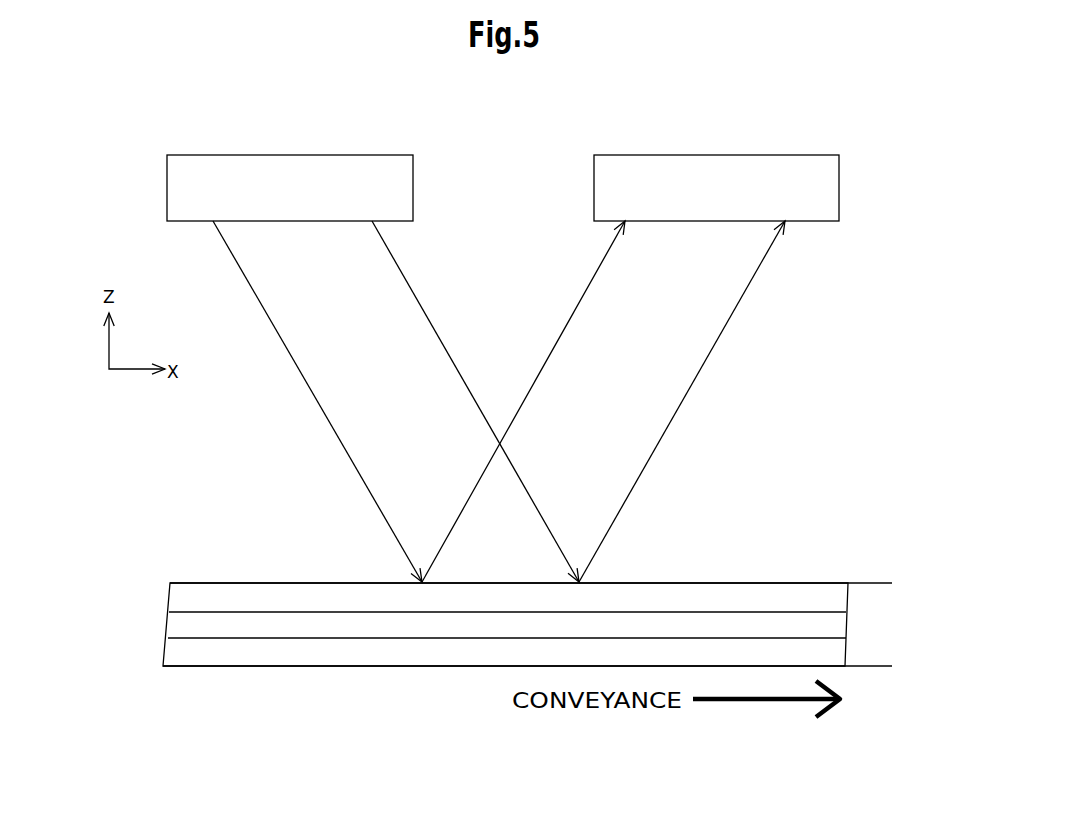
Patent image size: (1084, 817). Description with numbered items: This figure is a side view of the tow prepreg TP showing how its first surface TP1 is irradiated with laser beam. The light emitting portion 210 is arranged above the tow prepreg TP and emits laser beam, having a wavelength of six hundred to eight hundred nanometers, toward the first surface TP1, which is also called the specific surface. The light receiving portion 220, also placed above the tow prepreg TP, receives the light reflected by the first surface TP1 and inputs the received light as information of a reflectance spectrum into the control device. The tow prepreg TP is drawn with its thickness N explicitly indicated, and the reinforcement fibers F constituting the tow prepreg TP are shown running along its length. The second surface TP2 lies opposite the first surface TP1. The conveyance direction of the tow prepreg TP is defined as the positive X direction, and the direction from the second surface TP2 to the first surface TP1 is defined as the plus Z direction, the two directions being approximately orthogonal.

The light emitting portion 210 is at (343, 155).
The light receiving portion 220 is at (802, 155).
The tow prepreg TP is at (830, 578).
The first surface TP1 is at (221, 583).
The second surface TP2 is at (224, 666).
The reinforcement fibers F is at (182, 597).
The thickness N is at (883, 583).